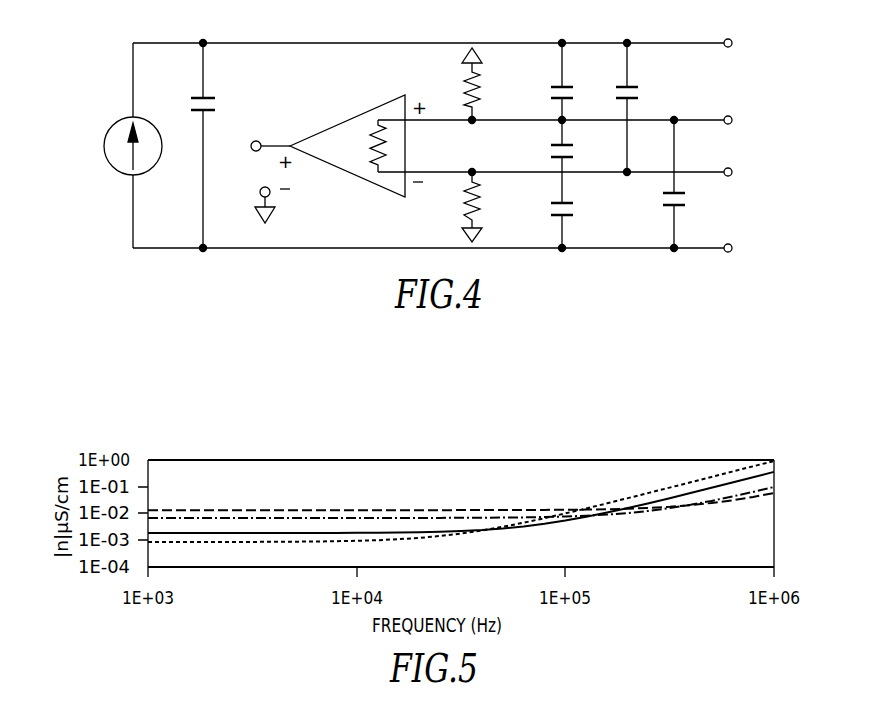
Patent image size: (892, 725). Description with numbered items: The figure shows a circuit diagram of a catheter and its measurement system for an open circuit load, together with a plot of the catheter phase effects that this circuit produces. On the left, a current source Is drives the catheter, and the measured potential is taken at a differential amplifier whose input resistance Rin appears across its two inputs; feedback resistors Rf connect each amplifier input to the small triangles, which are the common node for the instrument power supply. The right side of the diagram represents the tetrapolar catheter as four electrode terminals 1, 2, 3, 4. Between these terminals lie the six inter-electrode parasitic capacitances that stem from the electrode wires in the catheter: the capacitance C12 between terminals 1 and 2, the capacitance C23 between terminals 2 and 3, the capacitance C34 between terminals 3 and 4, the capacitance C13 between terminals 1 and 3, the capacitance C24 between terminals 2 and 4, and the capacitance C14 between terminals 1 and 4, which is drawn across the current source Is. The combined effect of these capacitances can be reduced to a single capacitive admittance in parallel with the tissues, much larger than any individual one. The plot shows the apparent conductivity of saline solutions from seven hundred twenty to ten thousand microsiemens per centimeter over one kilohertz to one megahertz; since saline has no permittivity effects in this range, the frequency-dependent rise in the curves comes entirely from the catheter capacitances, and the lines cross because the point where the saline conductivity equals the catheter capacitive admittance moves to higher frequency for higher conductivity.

The current source Is is at (136, 160).
The inter-electrode parasitic capacitance C14 is at (222, 103).
The input resistance Rin is at (361, 146).
The feedback resistor Rf is at (460, 145).
The inter-electrode parasitic capacitance C12 is at (541, 82).
The inter-electrode parasitic capacitance C23 is at (541, 146).
The inter-electrode parasitic capacitance C34 is at (541, 212).
The inter-electrode parasitic capacitance C13 is at (643, 108).
The inter-electrode parasitic capacitance C24 is at (654, 184).
The electrode terminal 1 is at (722, 54).
The electrode terminal 2 is at (722, 133).
The electrode terminal 3 is at (722, 183).
The electrode terminal 4 is at (722, 236).